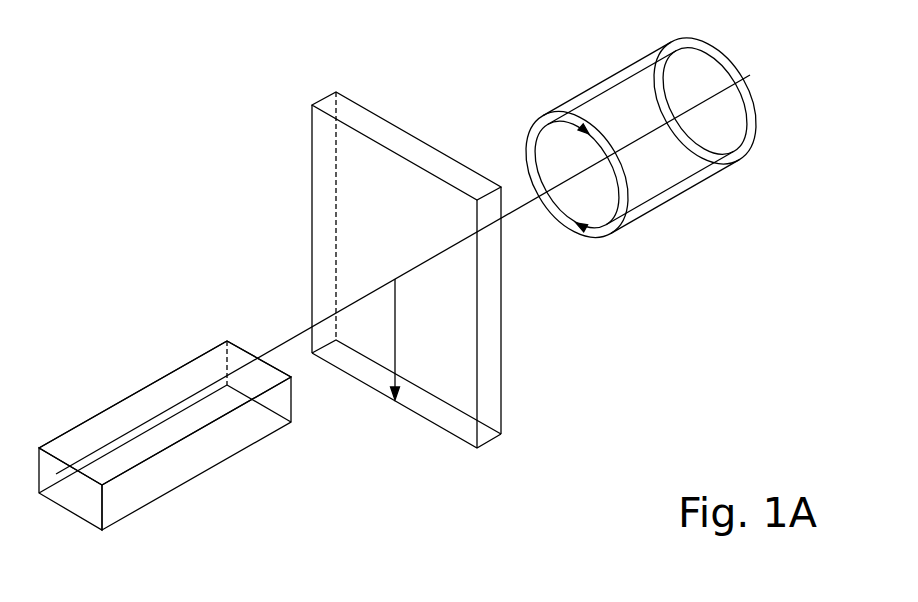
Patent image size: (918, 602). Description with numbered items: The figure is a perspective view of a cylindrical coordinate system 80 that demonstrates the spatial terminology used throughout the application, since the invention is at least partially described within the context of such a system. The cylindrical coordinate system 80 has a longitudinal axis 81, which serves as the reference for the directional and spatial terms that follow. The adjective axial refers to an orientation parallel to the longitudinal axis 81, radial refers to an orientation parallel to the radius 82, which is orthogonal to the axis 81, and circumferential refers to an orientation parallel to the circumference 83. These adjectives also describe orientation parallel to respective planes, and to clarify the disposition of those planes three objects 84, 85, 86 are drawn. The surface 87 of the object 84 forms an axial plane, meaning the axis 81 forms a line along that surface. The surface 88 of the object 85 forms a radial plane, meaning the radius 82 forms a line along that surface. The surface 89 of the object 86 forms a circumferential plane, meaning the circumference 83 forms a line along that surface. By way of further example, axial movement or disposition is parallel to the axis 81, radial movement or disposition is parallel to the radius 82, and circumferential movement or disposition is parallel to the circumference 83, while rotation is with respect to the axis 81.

The cylindrical coordinate system 80 is at (262, 144).
The longitudinal axis 81 is at (741, 80).
The radius 82 is at (394, 333).
The circumference 83 is at (527, 136).
The object 84 is at (128, 517).
The object 85 is at (512, 444).
The object 86 is at (680, 218).
The surface 87 is at (125, 415).
The surface 88 is at (325, 226).
The surface 89 is at (605, 78).